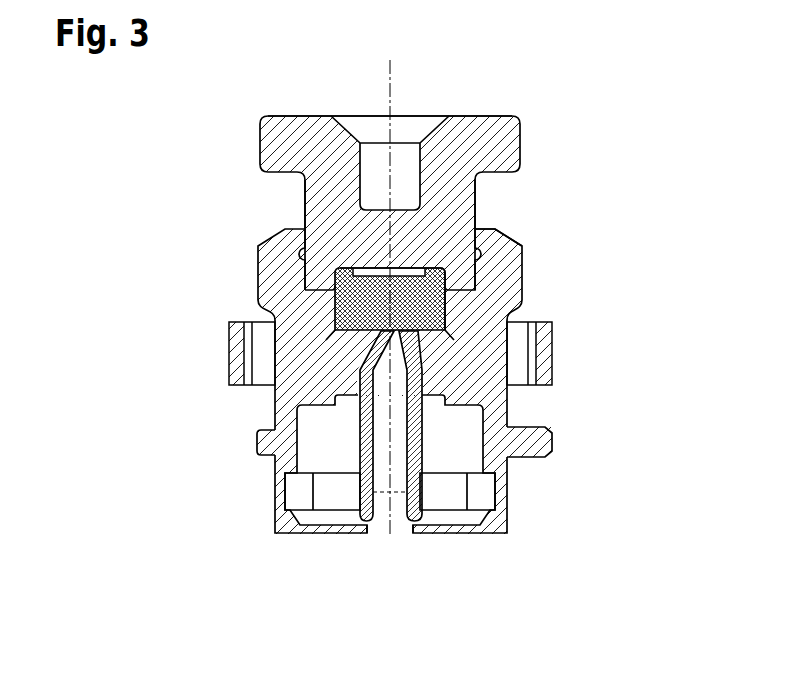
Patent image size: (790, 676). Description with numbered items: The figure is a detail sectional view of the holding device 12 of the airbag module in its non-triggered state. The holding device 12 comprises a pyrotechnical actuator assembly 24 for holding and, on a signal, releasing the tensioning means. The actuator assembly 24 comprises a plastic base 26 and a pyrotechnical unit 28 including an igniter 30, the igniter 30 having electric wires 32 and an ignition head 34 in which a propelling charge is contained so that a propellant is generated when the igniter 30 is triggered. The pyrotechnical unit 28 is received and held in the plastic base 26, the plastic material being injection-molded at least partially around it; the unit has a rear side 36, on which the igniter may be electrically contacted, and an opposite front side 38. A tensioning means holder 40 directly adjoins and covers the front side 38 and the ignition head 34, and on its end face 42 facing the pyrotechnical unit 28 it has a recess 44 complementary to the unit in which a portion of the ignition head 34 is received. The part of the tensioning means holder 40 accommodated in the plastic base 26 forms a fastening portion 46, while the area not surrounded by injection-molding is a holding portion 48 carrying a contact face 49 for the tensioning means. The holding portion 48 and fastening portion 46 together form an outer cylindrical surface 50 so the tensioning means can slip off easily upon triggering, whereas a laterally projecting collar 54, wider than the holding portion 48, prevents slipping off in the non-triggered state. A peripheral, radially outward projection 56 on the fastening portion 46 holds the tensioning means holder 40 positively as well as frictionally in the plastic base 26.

The holding device 12 is at (407, 340).
The pyrotechnical actuator assembly 24 is at (294, 353).
The plastic base 26 is at (275, 403).
The pyrotechnical unit 28 is at (308, 318).
The igniter 30 is at (425, 365).
The electric wires 32 is at (422, 452).
The ignition head 34 is at (440, 308).
The rear side 36 is at (409, 554).
The front side 38 is at (420, 250).
The tensioning means holder 40 is at (280, 137).
The end face 42 is at (335, 301).
The recess 44 is at (343, 270).
The fastening portion 46 is at (485, 230).
The holding portion 48 is at (307, 187).
The contact face 49 is at (297, 234).
The cylindrical surface 50 is at (303, 213).
The collar 54 is at (467, 133).
The projection 56 is at (445, 268).